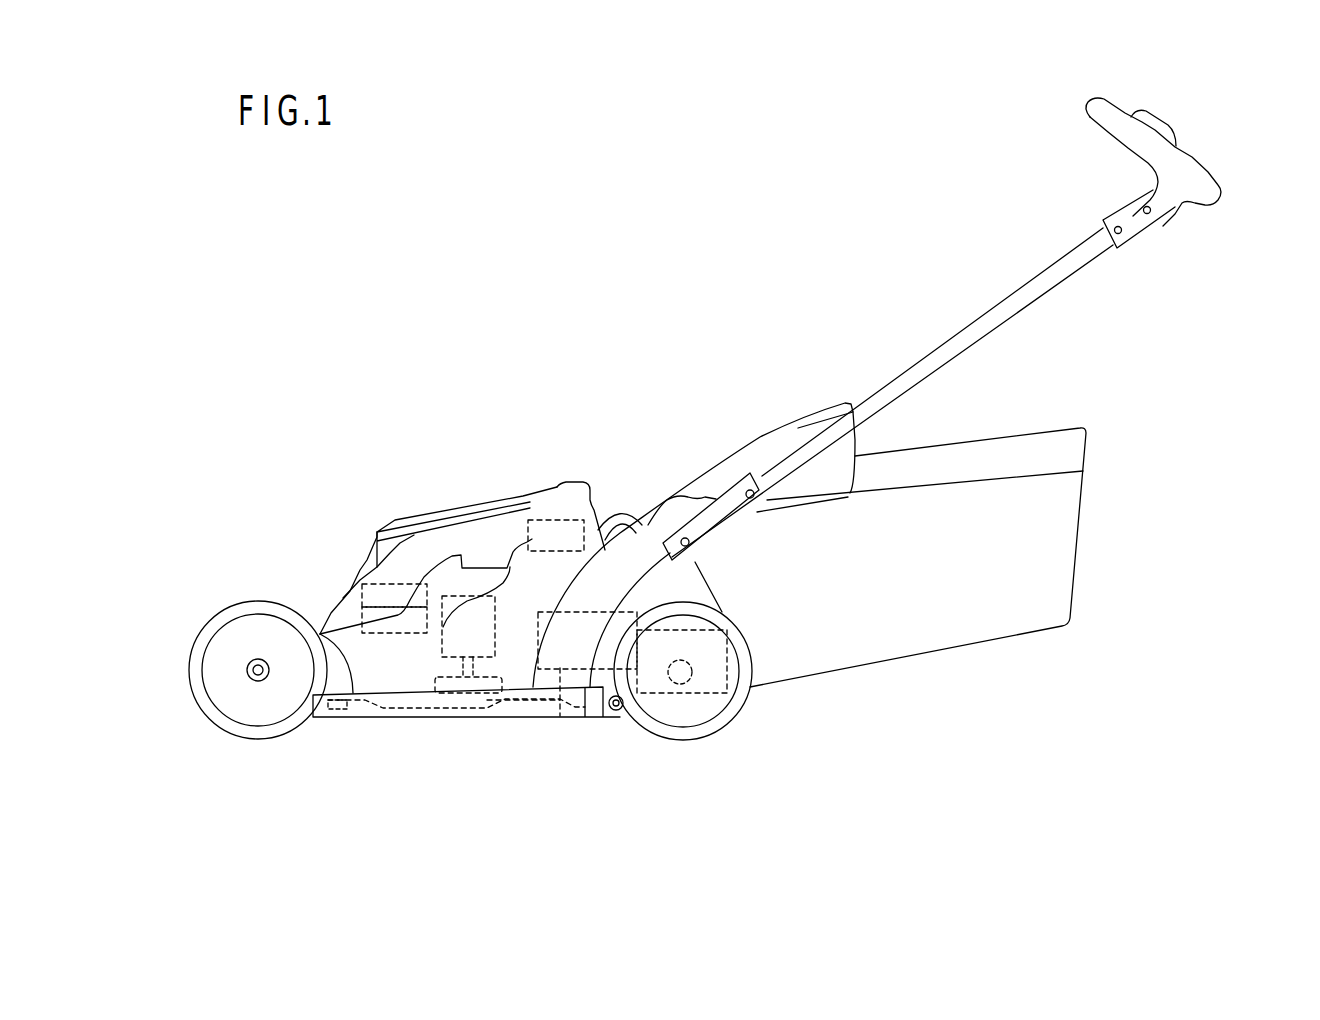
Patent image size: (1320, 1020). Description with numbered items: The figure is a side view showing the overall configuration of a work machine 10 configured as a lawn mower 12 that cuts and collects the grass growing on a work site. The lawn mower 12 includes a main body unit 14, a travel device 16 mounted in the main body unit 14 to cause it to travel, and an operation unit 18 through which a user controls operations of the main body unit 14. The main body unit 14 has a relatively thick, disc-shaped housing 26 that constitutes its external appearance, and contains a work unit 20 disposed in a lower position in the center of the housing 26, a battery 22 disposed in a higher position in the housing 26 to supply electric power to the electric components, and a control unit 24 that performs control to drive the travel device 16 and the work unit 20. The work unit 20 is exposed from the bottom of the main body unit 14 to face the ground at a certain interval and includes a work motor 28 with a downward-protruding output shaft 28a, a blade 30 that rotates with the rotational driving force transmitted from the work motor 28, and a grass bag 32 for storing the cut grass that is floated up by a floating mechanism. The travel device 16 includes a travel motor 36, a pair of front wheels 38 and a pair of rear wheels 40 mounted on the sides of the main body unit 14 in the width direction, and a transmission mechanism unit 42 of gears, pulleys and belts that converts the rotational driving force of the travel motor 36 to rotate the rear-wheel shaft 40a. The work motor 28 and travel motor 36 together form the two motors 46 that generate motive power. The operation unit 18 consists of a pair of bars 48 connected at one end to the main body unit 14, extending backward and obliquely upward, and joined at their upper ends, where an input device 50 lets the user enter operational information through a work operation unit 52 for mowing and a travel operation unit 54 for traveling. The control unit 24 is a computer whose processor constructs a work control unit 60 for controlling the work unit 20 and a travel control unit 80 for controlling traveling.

The work machine 10 is at (461, 241).
The lawn mower 12 is at (702, 439).
The main body unit 14 is at (345, 500).
The travel device 16 is at (748, 733).
The operation unit 18 is at (1187, 104).
The work unit 20 is at (475, 588).
The battery 22 is at (553, 518).
The control unit 24 is at (276, 528).
The housing 26 is at (417, 556).
The work motor 28 is at (488, 693).
The output shaft 28a is at (460, 669).
The blade 30 is at (397, 718).
The grass bag 32 is at (1060, 534).
The travel motor 36 is at (559, 675).
The front wheels 38 is at (215, 620).
The rear wheels 40 is at (750, 635).
The rear-wheel shaft 40a is at (724, 601).
The transmission mechanism unit 42 is at (661, 697).
The motors 46 is at (548, 768).
The bars 48 is at (993, 307).
The input device 50 is at (1196, 160).
The work operation unit 52 is at (1153, 114).
The travel operation unit 54 is at (1153, 128).
The work control unit 60 is at (360, 567).
The travel control unit 80 is at (362, 617).